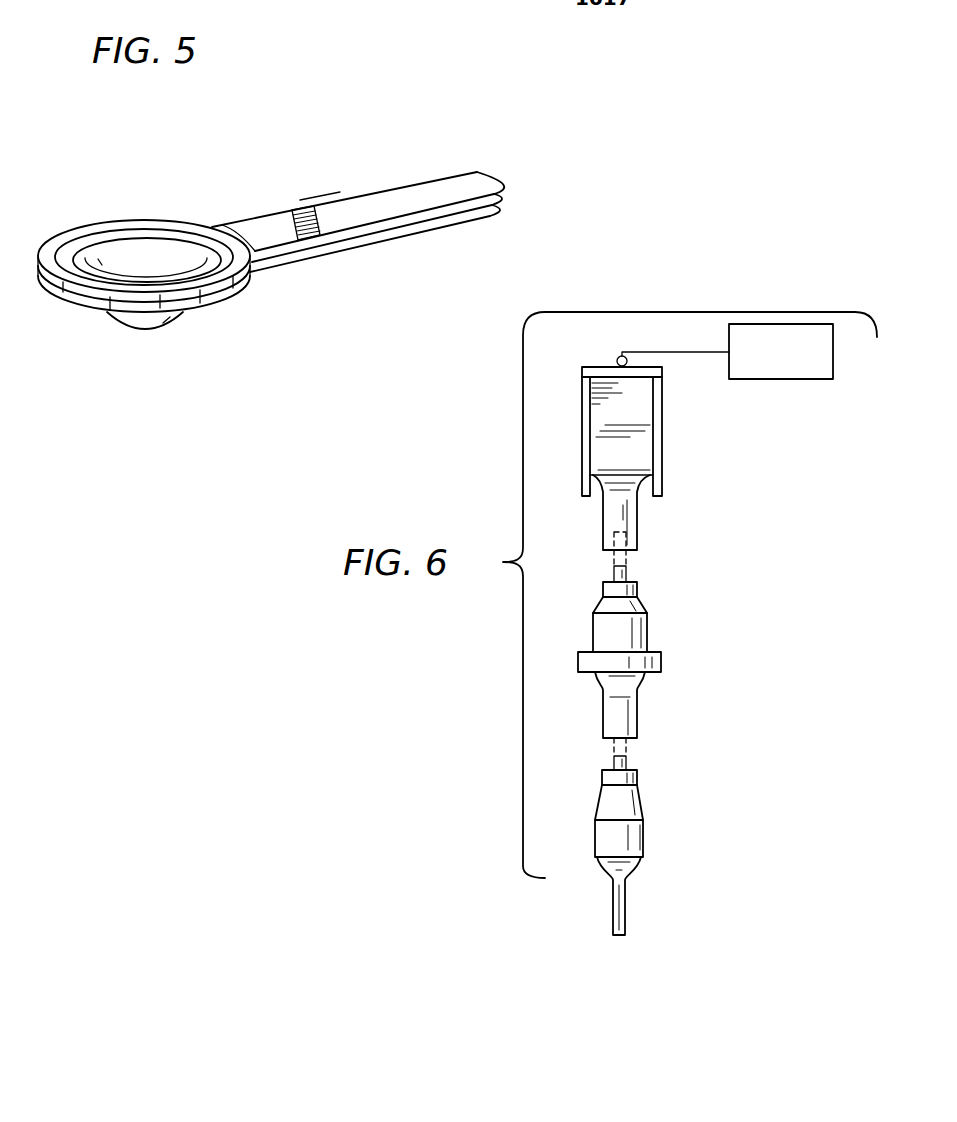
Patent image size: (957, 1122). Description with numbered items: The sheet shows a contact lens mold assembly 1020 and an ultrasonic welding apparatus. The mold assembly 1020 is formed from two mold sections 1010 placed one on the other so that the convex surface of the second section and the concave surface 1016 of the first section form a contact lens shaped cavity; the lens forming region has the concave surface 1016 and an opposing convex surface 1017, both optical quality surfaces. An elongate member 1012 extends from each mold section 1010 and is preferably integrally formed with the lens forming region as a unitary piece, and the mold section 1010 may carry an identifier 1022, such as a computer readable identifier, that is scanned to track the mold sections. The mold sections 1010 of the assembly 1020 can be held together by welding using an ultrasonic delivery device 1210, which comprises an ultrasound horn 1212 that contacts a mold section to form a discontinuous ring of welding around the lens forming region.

In FIG. 5, the mold section 1010 is at (333, 238).
In FIG. 5, the elongate member 1012 is at (397, 197).
In FIG. 5, the concave surface 1016 is at (148, 256).
In FIG. 5, the convex surface 1017 is at (167, 323).
In FIG. 5, the contact lens mold assembly 1020 is at (317, 161).
In FIG. 5, the identifier 1022 is at (302, 213).
In FIG. 6, the ultrasonic delivery device 1210 is at (690, 633).
In FIG. 6, the ultrasound horn 1212 is at (621, 936).